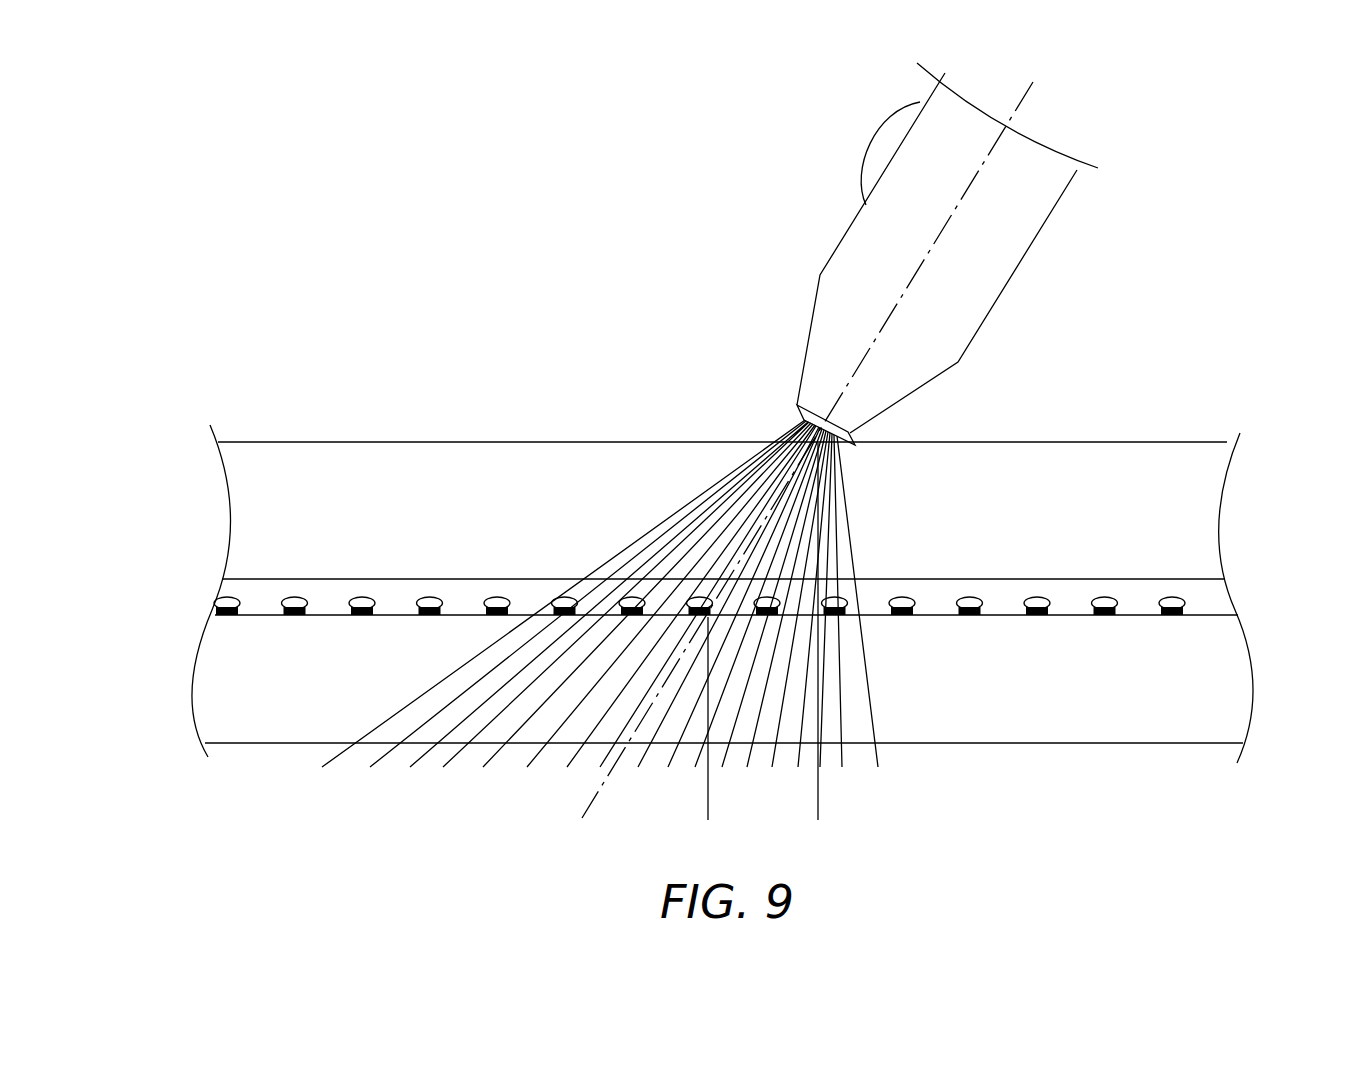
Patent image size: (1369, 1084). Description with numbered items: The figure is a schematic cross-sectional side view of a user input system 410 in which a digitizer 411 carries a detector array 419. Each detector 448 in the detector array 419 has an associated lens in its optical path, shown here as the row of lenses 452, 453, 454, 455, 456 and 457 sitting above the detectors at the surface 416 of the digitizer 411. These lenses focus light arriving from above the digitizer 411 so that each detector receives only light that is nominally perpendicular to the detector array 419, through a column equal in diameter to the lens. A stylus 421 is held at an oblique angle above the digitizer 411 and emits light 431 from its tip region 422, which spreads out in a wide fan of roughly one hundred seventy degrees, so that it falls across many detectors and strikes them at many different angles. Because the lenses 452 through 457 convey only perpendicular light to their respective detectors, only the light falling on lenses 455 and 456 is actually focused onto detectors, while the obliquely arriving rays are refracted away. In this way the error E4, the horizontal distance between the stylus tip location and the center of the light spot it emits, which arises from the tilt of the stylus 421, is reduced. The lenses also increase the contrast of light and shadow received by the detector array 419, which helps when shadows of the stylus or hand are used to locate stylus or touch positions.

The system 410 is at (521, 254).
The digitizer 411 is at (1272, 443).
The surface 416 is at (338, 441).
The detector array 419 is at (258, 614).
The stylus 421 is at (837, 242).
The emitter aperture plate 422 is at (795, 410).
The light 431 is at (450, 755).
The detector 448 is at (967, 615).
The lens 452 is at (566, 597).
The lens 453 is at (633, 597).
The lens 454 is at (700, 597).
The lens 455 is at (766, 597).
The lens 456 is at (835, 597).
The lens 457 is at (902, 597).
The error E4 is at (708, 808).